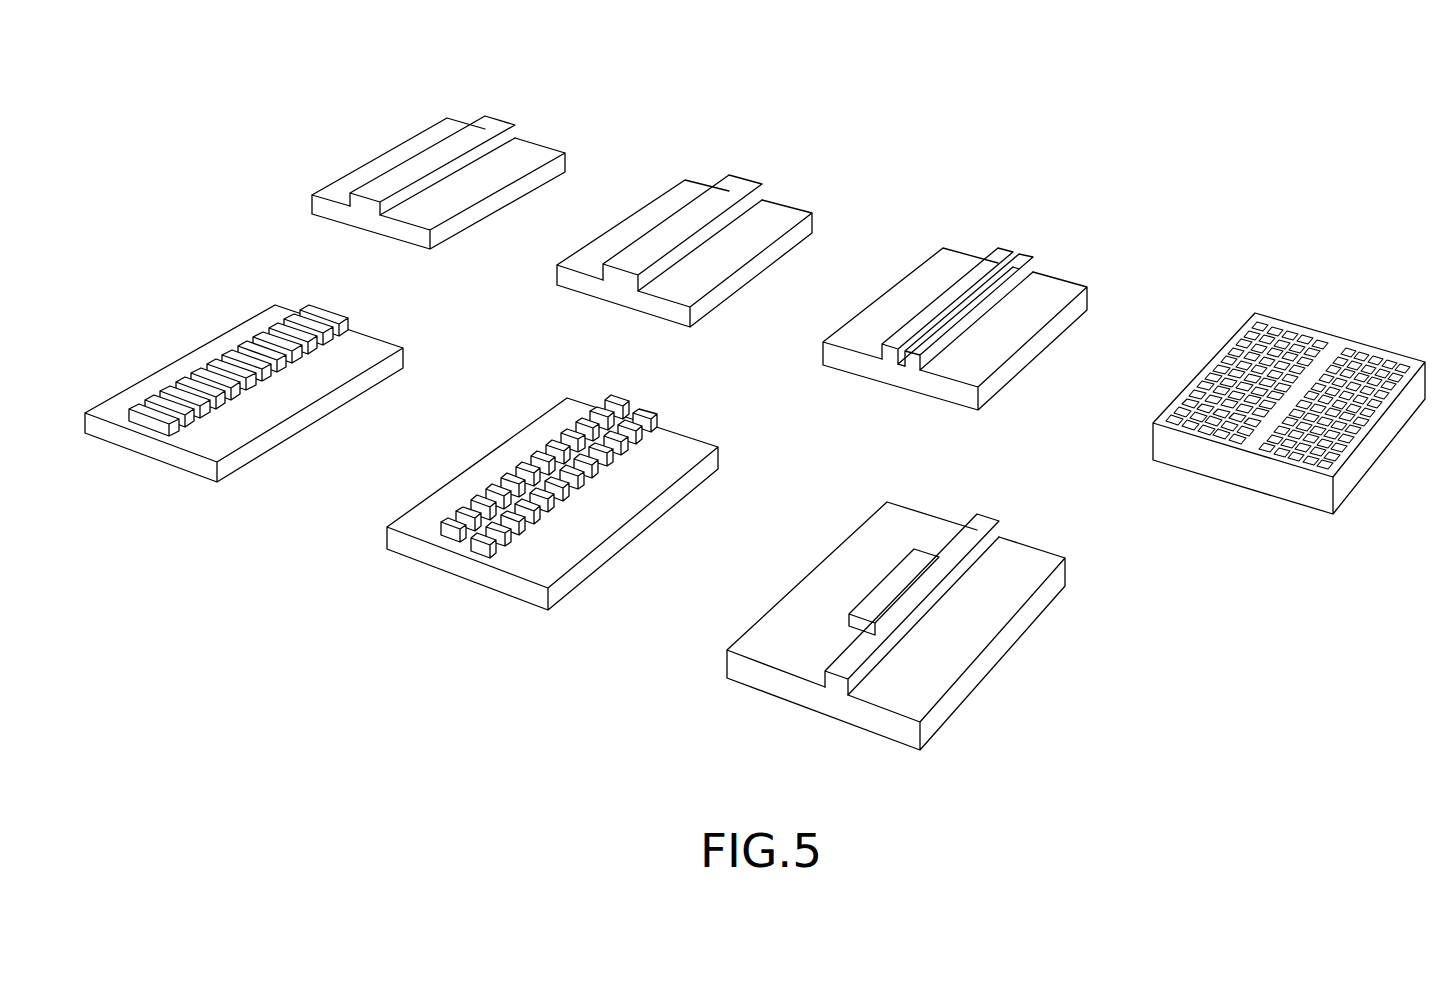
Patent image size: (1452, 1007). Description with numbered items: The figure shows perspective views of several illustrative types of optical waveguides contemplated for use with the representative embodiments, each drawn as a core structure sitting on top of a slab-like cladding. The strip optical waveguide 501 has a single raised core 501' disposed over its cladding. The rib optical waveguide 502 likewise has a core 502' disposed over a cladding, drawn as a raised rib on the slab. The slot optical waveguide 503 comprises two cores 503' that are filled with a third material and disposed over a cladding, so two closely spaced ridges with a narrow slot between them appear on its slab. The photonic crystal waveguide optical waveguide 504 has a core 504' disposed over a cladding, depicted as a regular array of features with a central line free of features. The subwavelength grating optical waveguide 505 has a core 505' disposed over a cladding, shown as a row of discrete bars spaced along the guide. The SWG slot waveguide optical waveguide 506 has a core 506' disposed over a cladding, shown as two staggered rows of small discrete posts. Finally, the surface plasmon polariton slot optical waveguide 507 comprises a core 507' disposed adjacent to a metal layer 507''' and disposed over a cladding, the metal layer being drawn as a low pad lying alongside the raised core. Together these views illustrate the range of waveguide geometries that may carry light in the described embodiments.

The strip optical waveguide 501 is at (470, 140).
The core 501' is at (454, 127).
The rib optical waveguide 502 is at (729, 201).
The core 502' is at (706, 202).
The slot optical waveguide 503 is at (974, 272).
The cores 503' is at (992, 282).
The photonic crystal waveguide optical waveguide 504 is at (1302, 358).
The core 504' is at (1288, 365).
The subwavelength grating (SWG) optical waveguide 505 is at (244, 371).
The core 505' is at (238, 349).
The SWG slot waveguide optical waveguide 506 is at (576, 472).
The core 506' is at (586, 463).
The surface plasmon polariton (SPP) slot optical waveguide 507 is at (913, 591).
The core 507' is at (962, 603).
The metal layer 507''' is at (883, 553).